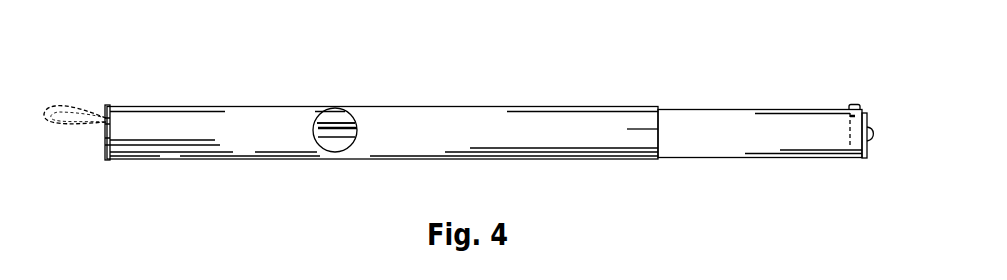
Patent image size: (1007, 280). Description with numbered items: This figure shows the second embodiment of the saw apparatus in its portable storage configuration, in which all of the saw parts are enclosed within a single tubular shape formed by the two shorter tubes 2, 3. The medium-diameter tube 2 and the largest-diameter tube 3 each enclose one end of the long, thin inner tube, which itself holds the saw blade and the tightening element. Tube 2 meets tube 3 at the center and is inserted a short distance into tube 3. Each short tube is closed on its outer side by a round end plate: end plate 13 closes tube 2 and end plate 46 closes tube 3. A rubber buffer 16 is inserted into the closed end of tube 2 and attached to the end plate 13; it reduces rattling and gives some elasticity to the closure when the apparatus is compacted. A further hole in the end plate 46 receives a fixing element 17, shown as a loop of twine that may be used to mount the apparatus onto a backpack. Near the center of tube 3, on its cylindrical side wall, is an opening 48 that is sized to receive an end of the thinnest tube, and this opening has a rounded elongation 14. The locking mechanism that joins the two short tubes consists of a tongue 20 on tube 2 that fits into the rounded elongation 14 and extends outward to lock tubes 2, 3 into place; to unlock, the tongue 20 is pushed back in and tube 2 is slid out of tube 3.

The tube 2 is at (747, 110).
The tube 3 is at (498, 106).
The end plate 13 is at (867, 150).
The rounded elongation 14 is at (360, 129).
The rubber buffer 16 is at (872, 134).
The fixing element 17 is at (72, 108).
The tongue 20 is at (342, 128).
The end plate 46 is at (107, 146).
The opening 48 is at (318, 113).